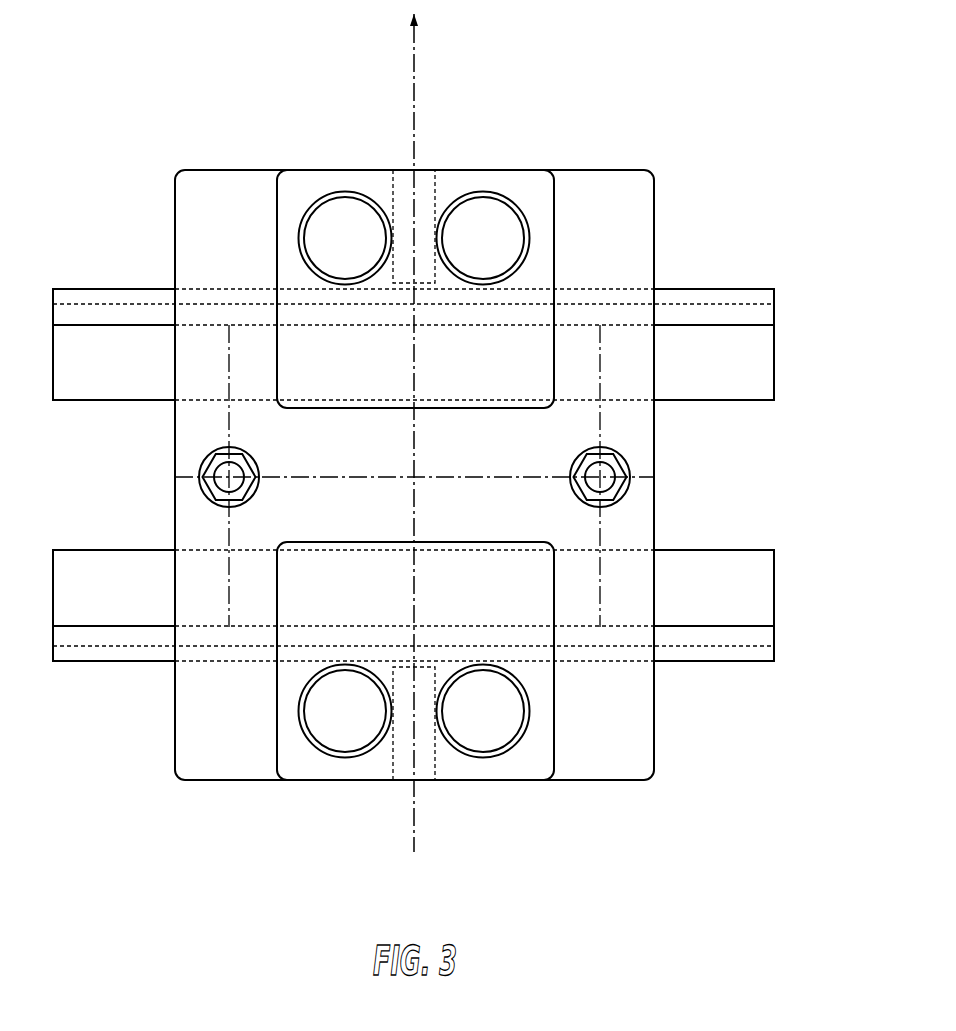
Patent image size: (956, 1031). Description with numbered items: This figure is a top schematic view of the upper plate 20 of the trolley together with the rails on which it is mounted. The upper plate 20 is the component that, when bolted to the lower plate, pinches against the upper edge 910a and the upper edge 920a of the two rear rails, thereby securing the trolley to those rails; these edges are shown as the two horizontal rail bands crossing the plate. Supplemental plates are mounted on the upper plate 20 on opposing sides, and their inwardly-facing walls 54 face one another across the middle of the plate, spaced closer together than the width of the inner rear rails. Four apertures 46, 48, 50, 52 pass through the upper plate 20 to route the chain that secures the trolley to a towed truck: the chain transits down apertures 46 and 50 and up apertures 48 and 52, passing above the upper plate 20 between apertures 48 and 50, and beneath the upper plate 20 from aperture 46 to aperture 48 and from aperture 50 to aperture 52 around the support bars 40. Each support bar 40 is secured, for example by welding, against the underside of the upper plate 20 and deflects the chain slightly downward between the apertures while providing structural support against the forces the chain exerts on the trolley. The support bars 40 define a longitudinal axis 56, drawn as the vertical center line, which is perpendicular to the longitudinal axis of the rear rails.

The upper plate 20 is at (76, 140).
The support bar 40 is at (405, 208).
The aperture 46 is at (337, 235).
The aperture 48 is at (490, 235).
The aperture 50 is at (478, 716).
The aperture 52 is at (343, 716).
The inwardly-facing walls 54 is at (428, 541).
The longitudinal axis 56 is at (415, 812).
The upper edge 910a is at (726, 580).
The upper edge 920a is at (726, 373).